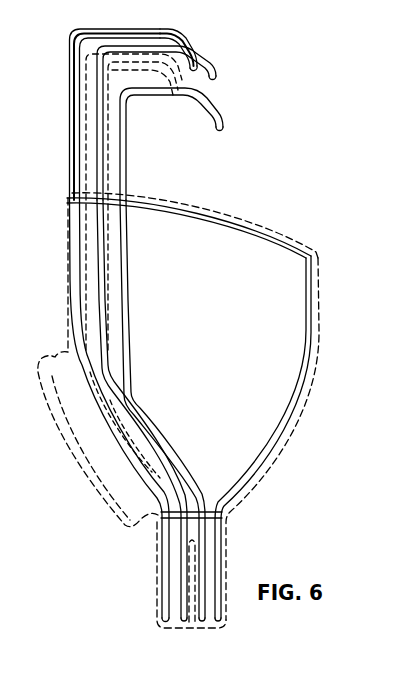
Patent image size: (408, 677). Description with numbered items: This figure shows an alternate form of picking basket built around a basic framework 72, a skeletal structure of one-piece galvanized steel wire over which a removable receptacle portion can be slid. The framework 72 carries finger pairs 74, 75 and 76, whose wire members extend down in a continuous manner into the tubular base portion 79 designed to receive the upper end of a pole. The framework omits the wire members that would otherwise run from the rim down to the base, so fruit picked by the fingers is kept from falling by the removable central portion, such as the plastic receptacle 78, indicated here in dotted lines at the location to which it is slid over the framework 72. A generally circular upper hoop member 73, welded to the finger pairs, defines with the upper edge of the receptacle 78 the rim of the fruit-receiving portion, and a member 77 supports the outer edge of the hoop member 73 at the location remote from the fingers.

The basic framework 72 is at (80, 257).
The upper hoop member 73 is at (252, 228).
The finger pair 74 is at (186, 43).
The finger pair 75 is at (220, 71).
The finger pair 76 is at (224, 119).
The support member 77 is at (310, 362).
The plastic receptacle 78 is at (303, 418).
The tubular base portion 79 is at (162, 588).